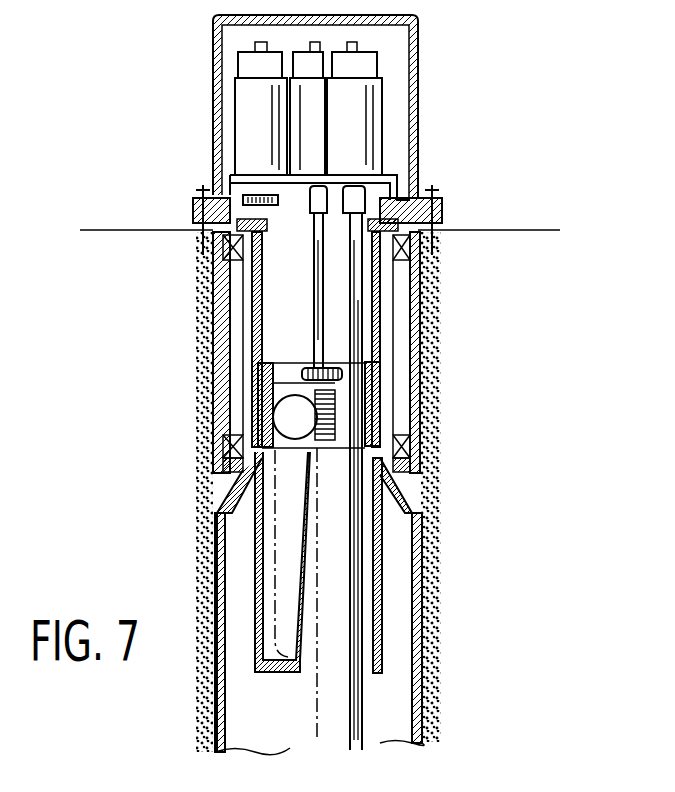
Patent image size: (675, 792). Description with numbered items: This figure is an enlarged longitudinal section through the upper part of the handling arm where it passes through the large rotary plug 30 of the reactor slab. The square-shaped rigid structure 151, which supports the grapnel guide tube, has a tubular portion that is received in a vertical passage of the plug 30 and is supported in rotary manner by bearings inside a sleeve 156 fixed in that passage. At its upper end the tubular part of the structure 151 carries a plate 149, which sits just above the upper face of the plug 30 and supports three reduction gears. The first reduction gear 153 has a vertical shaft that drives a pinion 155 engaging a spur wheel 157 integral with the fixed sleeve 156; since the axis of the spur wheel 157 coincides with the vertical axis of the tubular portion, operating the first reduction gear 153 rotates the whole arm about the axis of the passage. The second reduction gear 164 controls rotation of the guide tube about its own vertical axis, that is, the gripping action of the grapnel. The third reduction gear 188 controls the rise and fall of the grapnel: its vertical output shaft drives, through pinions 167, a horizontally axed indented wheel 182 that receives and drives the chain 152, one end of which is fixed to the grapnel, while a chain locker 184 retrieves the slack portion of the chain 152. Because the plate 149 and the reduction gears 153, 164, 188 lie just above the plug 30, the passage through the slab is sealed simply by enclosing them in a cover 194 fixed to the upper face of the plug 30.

The large rotary plug 30 is at (524, 432).
The plate 149 is at (235, 178).
The rigid structure 151 is at (422, 565).
The chain 152 is at (317, 693).
The first reduction gear 153 is at (255, 115).
The pinion 155 is at (290, 205).
The sleeve 156 is at (420, 312).
The spur wheel 157 is at (435, 196).
The second reduction gear 164 is at (360, 113).
The pinions 167 is at (298, 350).
The indented wheel 182 is at (300, 410).
The chain locker 184 is at (300, 525).
The third reduction gear 188 is at (300, 88).
The cover 194 is at (418, 35).